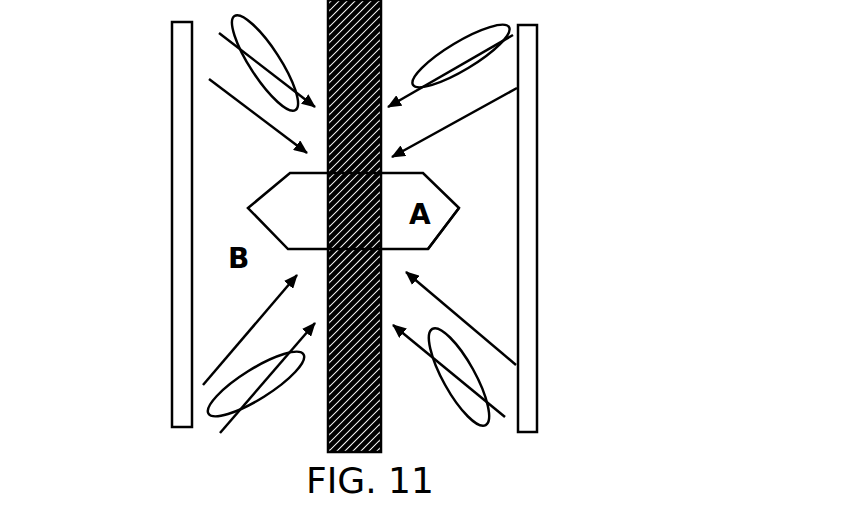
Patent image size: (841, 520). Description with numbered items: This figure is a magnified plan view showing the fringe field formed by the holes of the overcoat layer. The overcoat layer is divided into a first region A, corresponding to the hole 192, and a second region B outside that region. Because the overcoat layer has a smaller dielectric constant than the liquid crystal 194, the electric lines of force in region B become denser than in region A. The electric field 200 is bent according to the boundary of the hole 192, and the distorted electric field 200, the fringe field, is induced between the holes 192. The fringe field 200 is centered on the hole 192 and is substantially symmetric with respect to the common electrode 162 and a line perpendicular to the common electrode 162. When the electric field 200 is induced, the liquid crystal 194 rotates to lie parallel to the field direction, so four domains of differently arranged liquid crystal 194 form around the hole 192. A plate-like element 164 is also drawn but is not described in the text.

The common electrode 162 is at (385, 173).
The first plate 164 is at (172, 310).
The hole 192 is at (444, 228).
The liquid crystal 194 is at (487, 395).
The electric field 200 is at (247, 113).